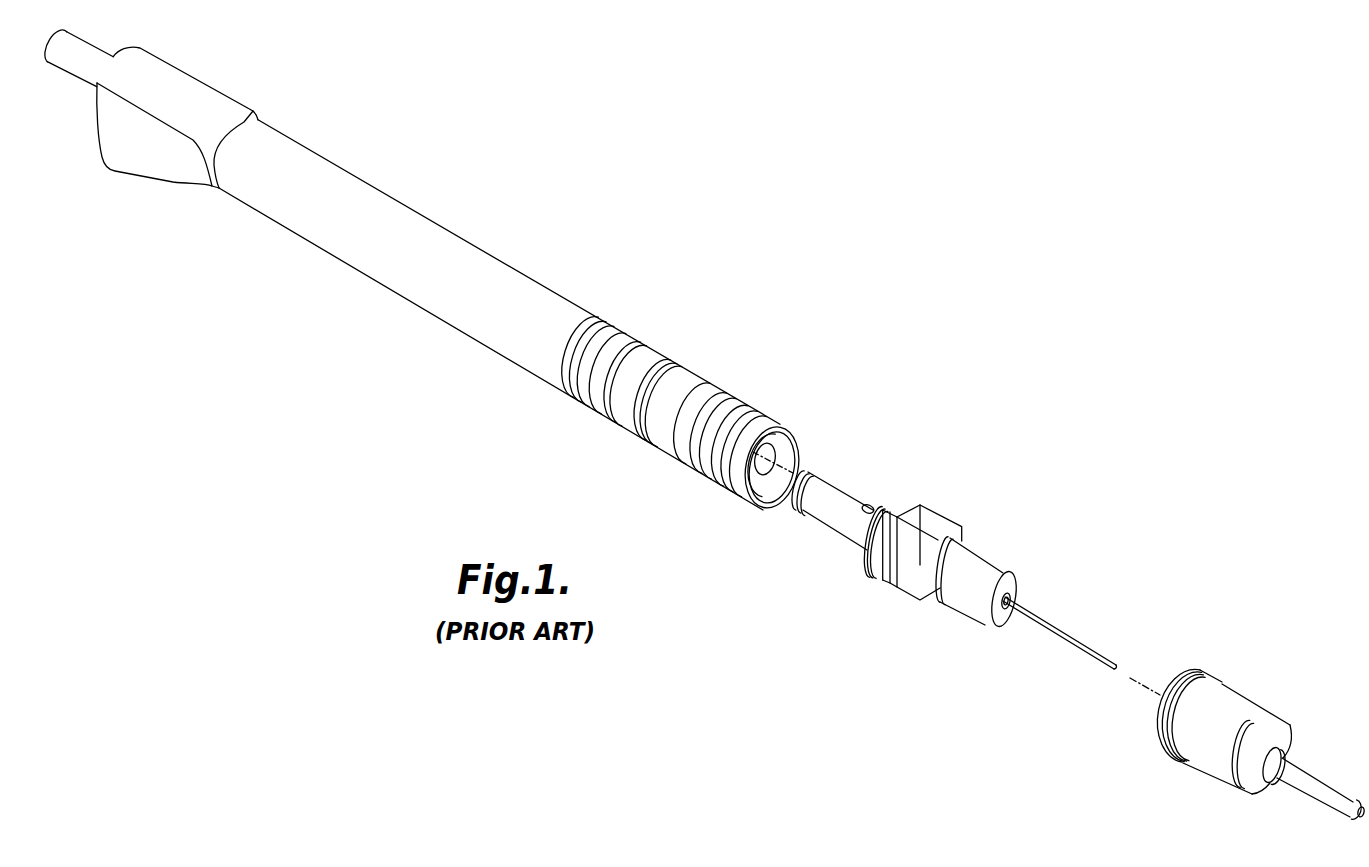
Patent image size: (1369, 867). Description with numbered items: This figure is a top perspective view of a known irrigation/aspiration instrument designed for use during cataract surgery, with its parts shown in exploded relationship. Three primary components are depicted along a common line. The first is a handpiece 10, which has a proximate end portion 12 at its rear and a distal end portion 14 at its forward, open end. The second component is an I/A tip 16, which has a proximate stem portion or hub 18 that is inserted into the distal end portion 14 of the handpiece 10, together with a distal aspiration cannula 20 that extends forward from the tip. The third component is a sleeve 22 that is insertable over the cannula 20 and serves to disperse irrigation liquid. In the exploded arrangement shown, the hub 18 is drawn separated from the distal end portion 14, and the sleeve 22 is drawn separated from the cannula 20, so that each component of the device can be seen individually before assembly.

The handpiece 10 is at (494, 283).
The proximate end portion 12 is at (228, 78).
The distal end portion 14 is at (778, 417).
The I/A tip 16 is at (977, 530).
The proximate stem portion or hub 18 is at (868, 490).
The distal aspiration cannula 20 is at (1073, 642).
The sleeve 22 is at (1237, 717).